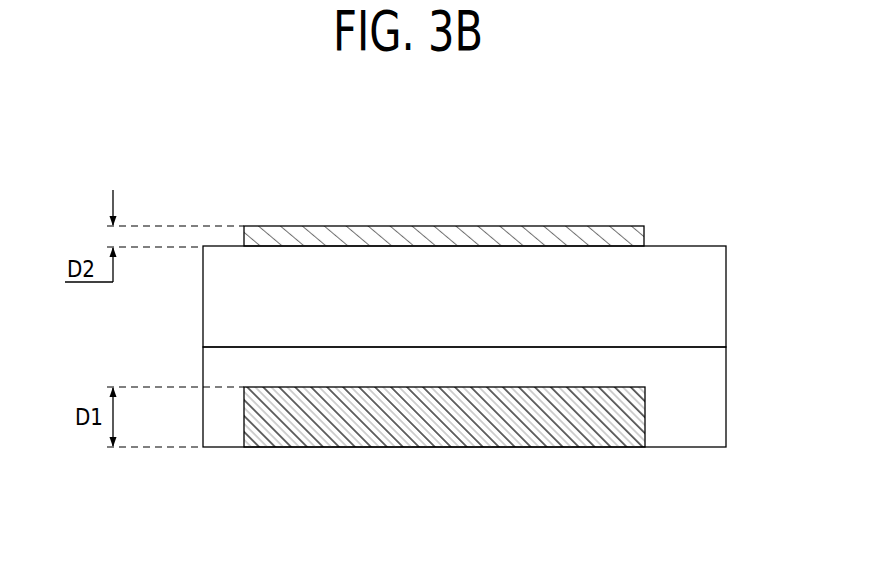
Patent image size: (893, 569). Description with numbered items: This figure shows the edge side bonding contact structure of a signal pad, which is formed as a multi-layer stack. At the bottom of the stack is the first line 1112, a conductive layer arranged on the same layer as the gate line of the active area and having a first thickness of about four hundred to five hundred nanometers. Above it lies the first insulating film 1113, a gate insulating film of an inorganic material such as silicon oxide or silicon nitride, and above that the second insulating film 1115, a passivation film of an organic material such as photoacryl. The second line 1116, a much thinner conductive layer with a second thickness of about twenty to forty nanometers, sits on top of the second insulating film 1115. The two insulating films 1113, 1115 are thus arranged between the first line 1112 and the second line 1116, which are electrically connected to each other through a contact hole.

The first line 1112 is at (557, 427).
The first insulating film 1113 is at (727, 407).
The second insulating film 1115 is at (726, 295).
The second line 1116 is at (435, 238).